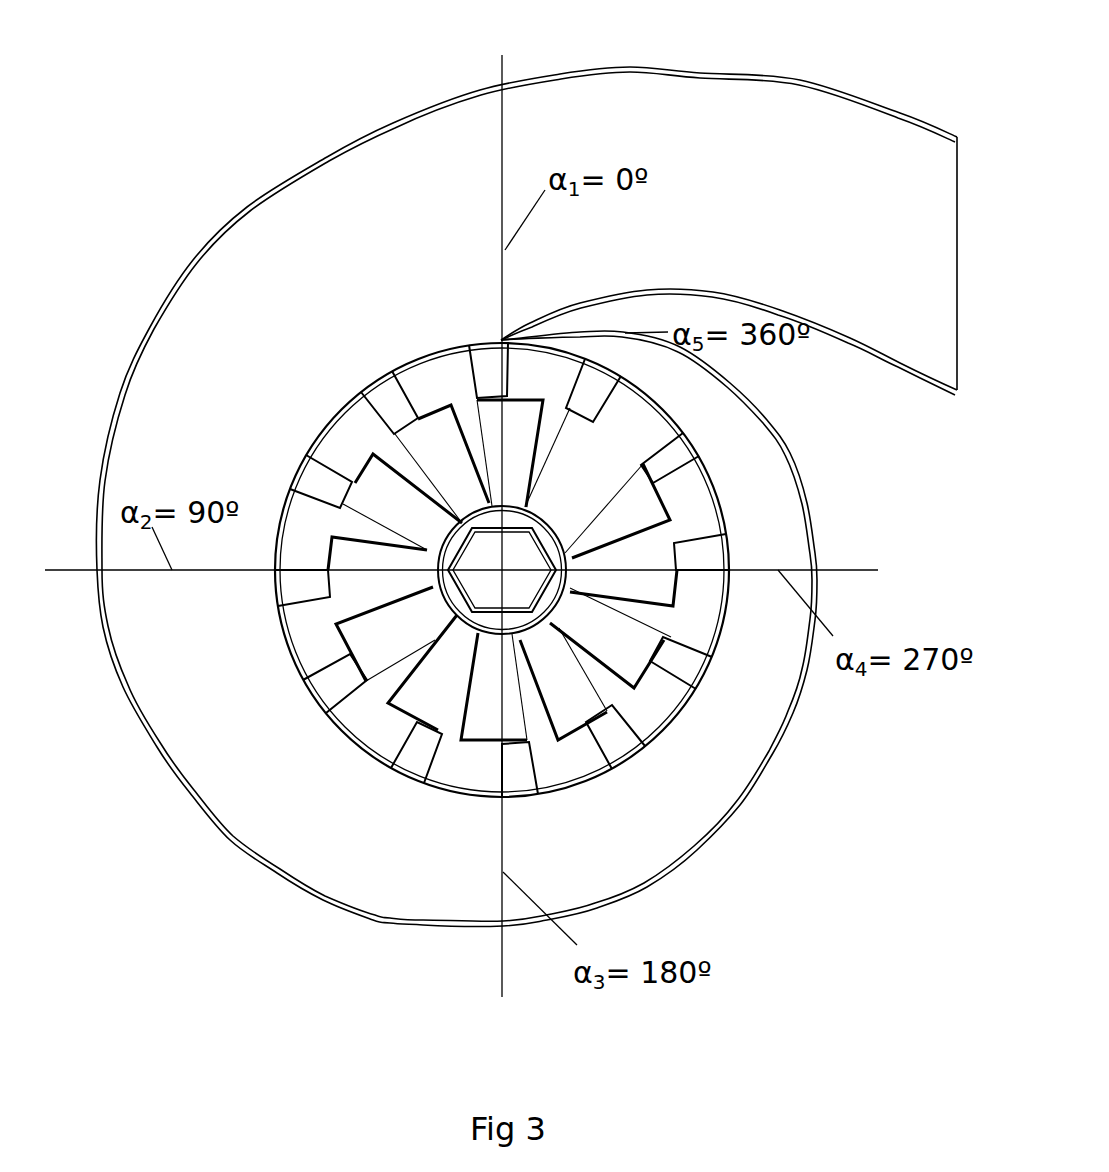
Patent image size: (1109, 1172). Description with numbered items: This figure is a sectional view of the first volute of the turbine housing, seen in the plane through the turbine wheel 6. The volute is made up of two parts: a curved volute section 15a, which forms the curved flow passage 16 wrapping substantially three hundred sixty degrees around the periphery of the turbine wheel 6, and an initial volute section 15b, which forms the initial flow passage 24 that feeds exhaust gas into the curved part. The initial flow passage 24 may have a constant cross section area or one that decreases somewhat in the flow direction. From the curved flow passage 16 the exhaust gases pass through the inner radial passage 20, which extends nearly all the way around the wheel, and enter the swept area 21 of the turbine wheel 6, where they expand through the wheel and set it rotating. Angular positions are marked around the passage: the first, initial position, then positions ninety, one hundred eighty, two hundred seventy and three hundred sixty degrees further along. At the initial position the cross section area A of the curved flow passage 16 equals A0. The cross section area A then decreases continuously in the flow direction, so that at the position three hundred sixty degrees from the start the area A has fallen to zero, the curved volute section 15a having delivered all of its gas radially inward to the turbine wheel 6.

The turbine wheel 6 is at (402, 720).
The curved volute section 15a is at (247, 208).
The initial volute section 15b is at (802, 80).
The curved flow passage 16 is at (269, 340).
The inner radial passage 20 is at (330, 433).
The swept area 21 is at (397, 402).
The initial flow passage 24 is at (771, 215).
The cross section area A is at (211, 682).
The initial cross section area A0 is at (500, 226).